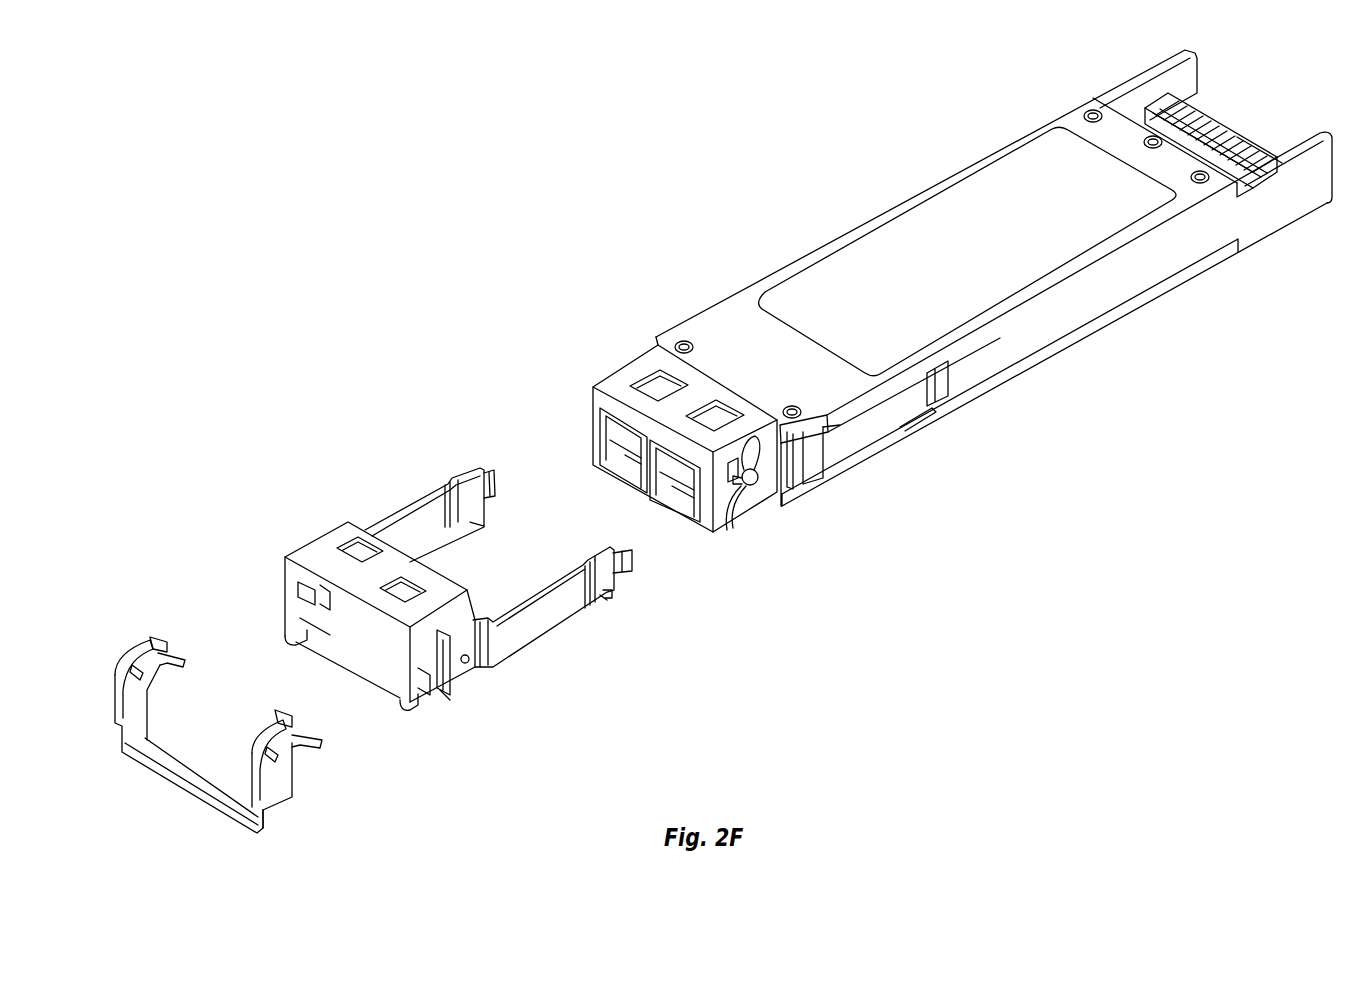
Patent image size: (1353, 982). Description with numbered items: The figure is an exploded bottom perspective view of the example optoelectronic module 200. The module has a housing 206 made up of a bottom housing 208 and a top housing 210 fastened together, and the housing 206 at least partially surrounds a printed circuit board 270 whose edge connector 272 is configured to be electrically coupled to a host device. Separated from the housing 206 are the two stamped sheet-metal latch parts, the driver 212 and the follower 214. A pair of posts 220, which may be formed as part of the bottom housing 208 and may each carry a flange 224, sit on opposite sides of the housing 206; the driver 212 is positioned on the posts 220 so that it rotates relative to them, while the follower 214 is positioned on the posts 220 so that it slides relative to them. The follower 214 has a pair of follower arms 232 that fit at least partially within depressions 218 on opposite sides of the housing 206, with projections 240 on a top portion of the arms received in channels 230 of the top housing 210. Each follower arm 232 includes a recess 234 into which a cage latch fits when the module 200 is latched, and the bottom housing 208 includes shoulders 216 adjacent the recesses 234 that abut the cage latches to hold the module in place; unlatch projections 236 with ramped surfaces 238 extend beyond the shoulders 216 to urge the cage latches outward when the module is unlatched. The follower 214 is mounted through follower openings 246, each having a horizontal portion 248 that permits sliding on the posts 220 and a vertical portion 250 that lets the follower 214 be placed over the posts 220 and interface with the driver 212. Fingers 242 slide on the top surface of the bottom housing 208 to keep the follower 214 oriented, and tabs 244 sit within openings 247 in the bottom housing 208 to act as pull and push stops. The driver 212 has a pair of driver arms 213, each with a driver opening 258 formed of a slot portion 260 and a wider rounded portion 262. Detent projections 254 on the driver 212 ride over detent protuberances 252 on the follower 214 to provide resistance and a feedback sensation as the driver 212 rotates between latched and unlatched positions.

The optoelectronic module 200 is at (134, 146).
The housing 206 is at (994, 278).
The bottom housing 208 is at (967, 251).
The top housing 210 is at (1054, 354).
The driver 212 is at (192, 749).
The driver arms 213 is at (317, 824).
The follower 214 is at (375, 604).
The shoulders 216 is at (954, 431).
The depressions 218 is at (883, 455).
The posts 220 is at (677, 453).
The flange 224 is at (705, 522).
The channels 230 is at (967, 396).
The follower arms 232 is at (489, 567).
The recesses 234 is at (645, 600).
The unlatch projections 236 is at (589, 529).
The ramped surfaces 238 is at (649, 599).
The projections 240 is at (582, 591).
The fingers 242 is at (326, 689).
The tabs 244 is at (350, 543).
The follower openings 246 is at (418, 693).
The openings 247 is at (685, 408).
The horizontal portions 248 is at (332, 638).
The vertical portions 250 is at (428, 660).
The detent protuberances 252 is at (499, 684).
The detent projections 254 is at (265, 720).
The driver opening 258 is at (165, 746).
The slot portion 260 is at (251, 748).
The rounded portion 262 is at (258, 723).
The printed circuit board 270 is at (1227, 143).
The edge connector 272 is at (1211, 118).